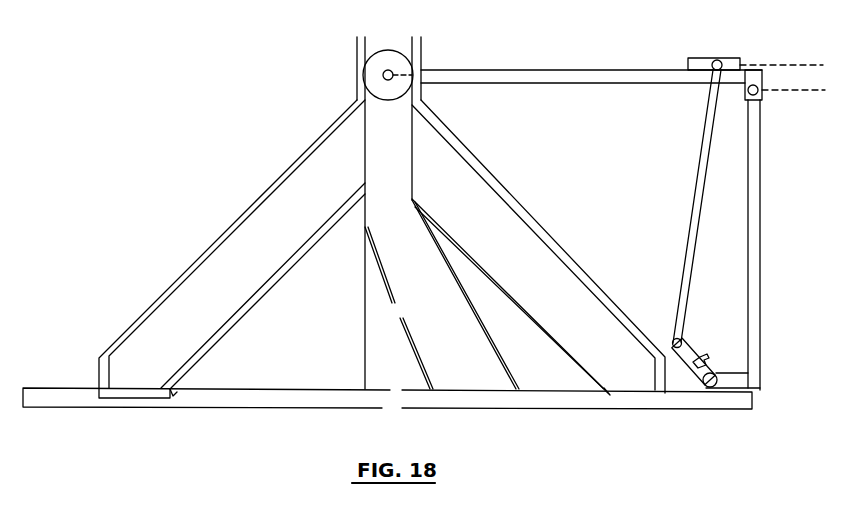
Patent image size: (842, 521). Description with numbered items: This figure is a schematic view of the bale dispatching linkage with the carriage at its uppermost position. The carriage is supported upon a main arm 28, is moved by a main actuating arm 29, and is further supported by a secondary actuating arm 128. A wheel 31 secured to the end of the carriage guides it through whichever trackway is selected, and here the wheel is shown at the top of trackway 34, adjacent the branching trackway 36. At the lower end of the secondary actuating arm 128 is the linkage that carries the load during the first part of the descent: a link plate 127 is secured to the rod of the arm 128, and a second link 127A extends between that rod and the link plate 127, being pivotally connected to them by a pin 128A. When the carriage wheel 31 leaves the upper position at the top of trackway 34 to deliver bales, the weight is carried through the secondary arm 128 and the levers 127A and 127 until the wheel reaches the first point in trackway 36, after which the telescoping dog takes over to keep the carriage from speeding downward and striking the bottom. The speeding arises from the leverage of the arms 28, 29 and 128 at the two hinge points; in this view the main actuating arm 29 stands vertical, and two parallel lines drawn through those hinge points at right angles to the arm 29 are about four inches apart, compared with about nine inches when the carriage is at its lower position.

The main arm 28 is at (508, 72).
The main actuating arm 29 is at (761, 260).
The wheel 31 is at (397, 62).
The trackway 34 is at (389, 182).
The trackway 36 is at (330, 161).
The link plate 127 is at (692, 372).
The second link 127A is at (681, 343).
The secondary actuating arm 128 is at (700, 163).
The pin 128A is at (686, 368).